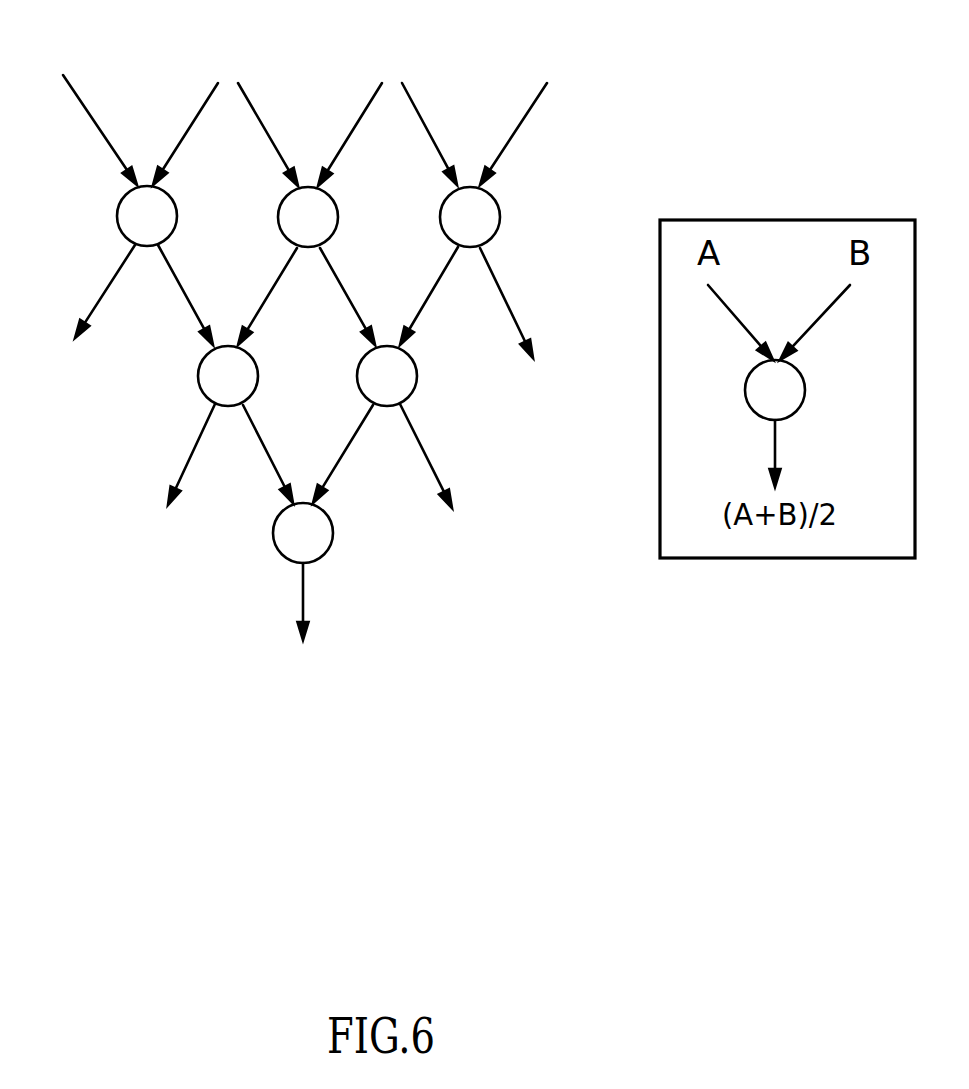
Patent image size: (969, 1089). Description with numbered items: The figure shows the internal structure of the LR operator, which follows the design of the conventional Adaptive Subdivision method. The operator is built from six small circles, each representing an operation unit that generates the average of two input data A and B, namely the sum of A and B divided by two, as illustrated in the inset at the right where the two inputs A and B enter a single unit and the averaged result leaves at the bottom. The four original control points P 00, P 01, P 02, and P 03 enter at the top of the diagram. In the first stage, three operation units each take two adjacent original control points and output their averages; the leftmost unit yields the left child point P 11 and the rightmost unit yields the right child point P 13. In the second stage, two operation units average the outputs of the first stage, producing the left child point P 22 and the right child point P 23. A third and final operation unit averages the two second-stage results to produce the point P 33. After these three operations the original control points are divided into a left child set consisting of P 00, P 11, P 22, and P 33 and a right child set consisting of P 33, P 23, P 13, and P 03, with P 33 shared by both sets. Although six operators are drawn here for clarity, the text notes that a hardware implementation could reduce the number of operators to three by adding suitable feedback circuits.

The control point P00 00 is at (88, 105).
The control point P01 01 is at (225, 106).
The control point P02 02 is at (387, 106).
The control point P03 03 is at (535, 105).
The left child control point P11 11 is at (101, 320).
The right child control point P13 13 is at (528, 326).
The left child control point P22 22 is at (187, 481).
The right child control point P23 23 is at (449, 481).
The shared child control point P33 33 is at (319, 630).